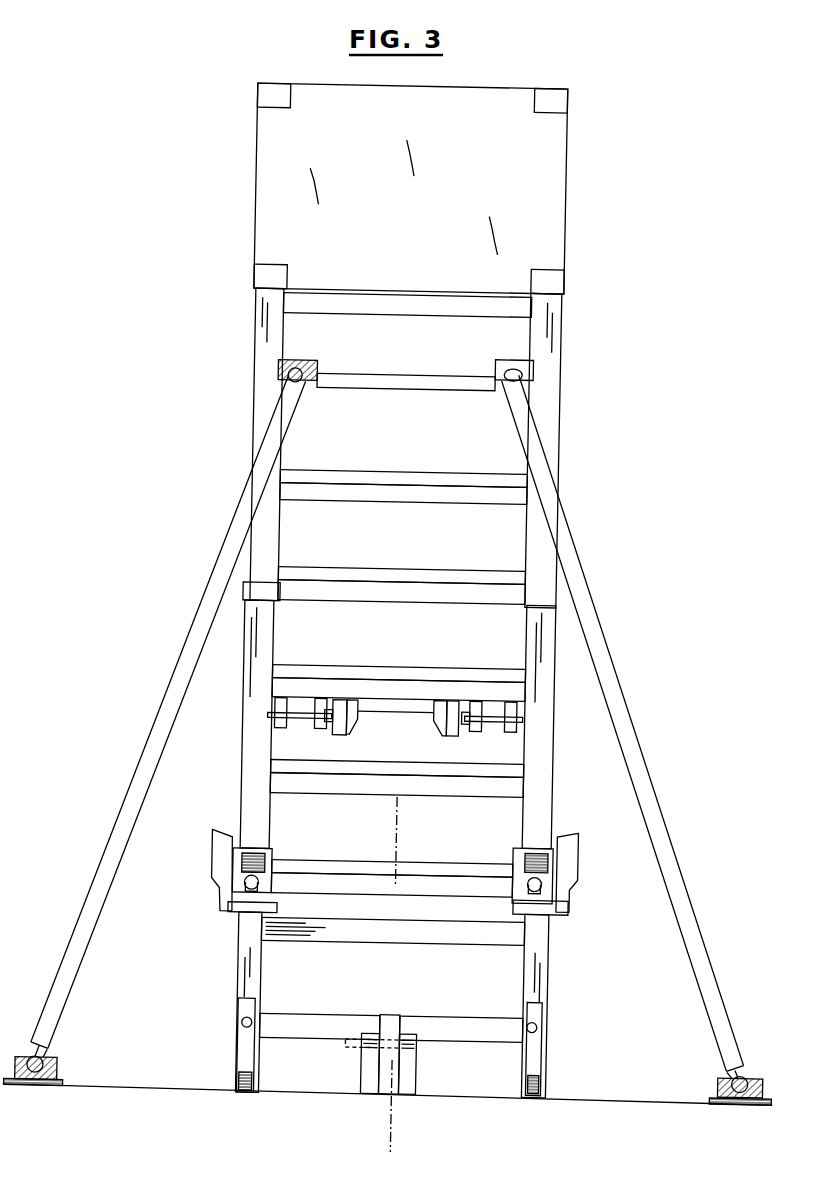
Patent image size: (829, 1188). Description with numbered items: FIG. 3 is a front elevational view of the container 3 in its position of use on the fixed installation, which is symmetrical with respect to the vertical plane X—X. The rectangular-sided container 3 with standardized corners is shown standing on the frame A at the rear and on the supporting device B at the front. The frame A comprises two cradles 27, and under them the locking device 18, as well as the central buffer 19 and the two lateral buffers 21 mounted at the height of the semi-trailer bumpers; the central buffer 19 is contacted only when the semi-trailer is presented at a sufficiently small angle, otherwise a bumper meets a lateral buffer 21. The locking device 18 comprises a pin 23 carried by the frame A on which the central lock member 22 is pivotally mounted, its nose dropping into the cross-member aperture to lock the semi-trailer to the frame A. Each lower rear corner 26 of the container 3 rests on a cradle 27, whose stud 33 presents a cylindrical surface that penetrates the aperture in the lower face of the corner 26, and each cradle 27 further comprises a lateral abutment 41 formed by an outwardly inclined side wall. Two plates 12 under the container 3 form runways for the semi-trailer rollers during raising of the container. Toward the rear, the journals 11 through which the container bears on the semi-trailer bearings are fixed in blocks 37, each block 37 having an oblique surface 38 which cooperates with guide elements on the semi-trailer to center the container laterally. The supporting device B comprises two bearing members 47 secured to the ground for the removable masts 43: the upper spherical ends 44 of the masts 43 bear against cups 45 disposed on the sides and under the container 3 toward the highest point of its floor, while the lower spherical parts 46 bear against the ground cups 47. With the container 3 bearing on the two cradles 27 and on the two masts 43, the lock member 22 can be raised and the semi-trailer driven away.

The container 3 is at (523, 180).
The journals 11 is at (309, 722).
The plates 12 is at (260, 556).
The locking device 18 is at (384, 1065).
The central buffer 19 is at (417, 1047).
The lateral buffers 21 is at (249, 1025).
The central lock member 22 is at (394, 1033).
The pin 23 is at (370, 1045).
The lower rear corners 26 is at (268, 861).
The cradles 27 is at (241, 919).
The stud 33 is at (266, 898).
The block 37 is at (353, 720).
The oblique surface 38 is at (440, 712).
The lateral abutment 41 is at (225, 859).
The masts 43 is at (128, 823).
The upper spherical ends 44 is at (272, 371).
The cups 45 is at (296, 380).
The lower spherical parts 46 is at (40, 1064).
The bearing members 47 is at (62, 1077).
The frame A is at (233, 987).
The supporting device B is at (142, 734).
The vertical plane of symmetry X is at (403, 974).